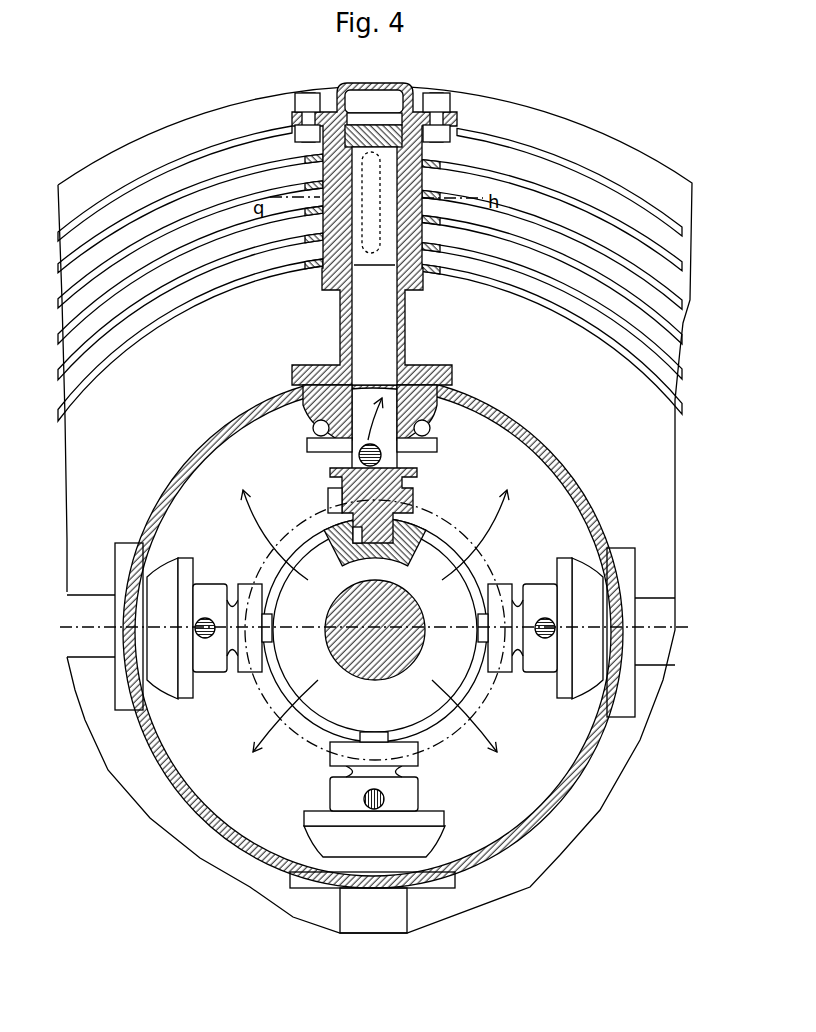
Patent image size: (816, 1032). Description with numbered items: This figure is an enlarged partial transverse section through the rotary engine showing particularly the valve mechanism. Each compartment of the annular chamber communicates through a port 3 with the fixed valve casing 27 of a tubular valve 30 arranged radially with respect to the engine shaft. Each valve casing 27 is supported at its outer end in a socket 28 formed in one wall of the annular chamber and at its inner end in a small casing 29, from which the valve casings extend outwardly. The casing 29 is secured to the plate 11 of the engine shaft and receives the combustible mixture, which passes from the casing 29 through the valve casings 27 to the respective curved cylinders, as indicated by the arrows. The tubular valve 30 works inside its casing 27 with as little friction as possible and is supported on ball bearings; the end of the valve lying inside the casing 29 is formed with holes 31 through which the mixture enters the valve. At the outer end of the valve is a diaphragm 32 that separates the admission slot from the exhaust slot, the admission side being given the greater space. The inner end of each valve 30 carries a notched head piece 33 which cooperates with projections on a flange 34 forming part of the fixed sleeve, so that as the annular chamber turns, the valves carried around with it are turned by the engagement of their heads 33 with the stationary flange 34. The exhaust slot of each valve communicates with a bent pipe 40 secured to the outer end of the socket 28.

The port 3 is at (316, 262).
The plate 11 is at (337, 542).
The valve casing 27 is at (82, 610).
The socket 28 is at (432, 246).
The casing 29 is at (512, 424).
The tubular valve 30 is at (348, 325).
The holes 31 is at (410, 455).
The diaphragm 32 is at (370, 146).
The head piece 33 is at (413, 495).
The flange 34 is at (477, 568).
The bent pipe 40 is at (400, 84).